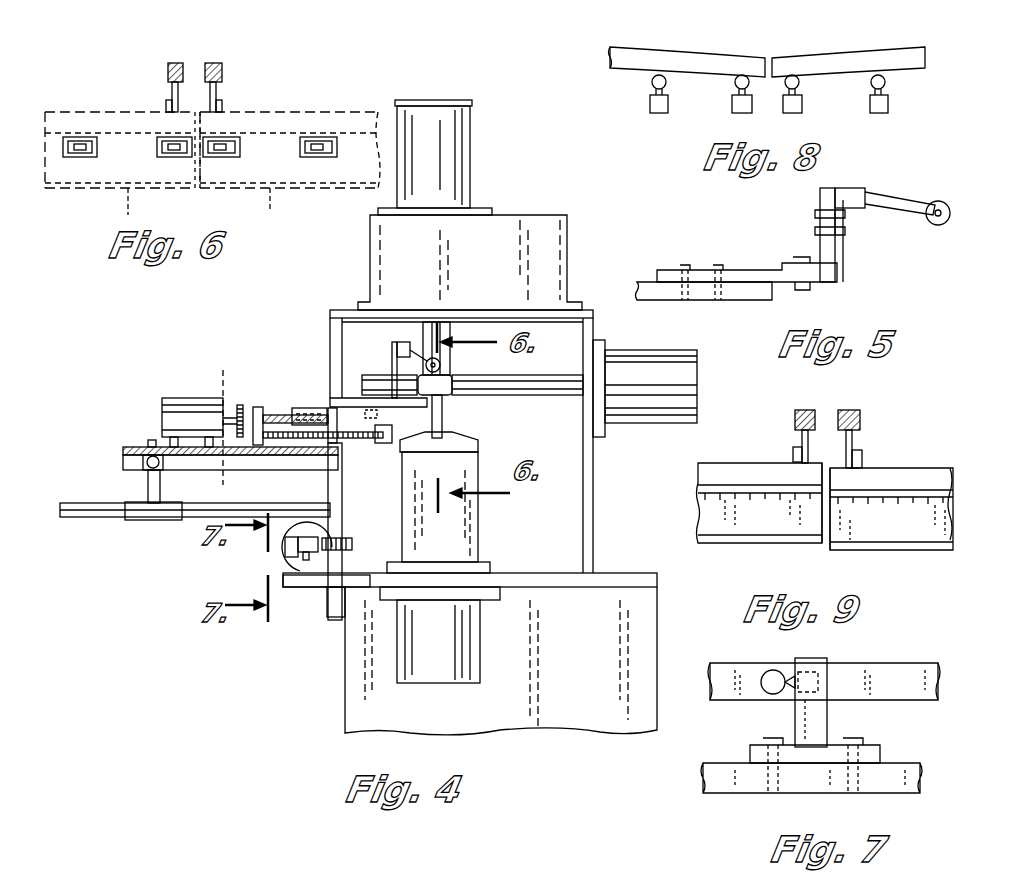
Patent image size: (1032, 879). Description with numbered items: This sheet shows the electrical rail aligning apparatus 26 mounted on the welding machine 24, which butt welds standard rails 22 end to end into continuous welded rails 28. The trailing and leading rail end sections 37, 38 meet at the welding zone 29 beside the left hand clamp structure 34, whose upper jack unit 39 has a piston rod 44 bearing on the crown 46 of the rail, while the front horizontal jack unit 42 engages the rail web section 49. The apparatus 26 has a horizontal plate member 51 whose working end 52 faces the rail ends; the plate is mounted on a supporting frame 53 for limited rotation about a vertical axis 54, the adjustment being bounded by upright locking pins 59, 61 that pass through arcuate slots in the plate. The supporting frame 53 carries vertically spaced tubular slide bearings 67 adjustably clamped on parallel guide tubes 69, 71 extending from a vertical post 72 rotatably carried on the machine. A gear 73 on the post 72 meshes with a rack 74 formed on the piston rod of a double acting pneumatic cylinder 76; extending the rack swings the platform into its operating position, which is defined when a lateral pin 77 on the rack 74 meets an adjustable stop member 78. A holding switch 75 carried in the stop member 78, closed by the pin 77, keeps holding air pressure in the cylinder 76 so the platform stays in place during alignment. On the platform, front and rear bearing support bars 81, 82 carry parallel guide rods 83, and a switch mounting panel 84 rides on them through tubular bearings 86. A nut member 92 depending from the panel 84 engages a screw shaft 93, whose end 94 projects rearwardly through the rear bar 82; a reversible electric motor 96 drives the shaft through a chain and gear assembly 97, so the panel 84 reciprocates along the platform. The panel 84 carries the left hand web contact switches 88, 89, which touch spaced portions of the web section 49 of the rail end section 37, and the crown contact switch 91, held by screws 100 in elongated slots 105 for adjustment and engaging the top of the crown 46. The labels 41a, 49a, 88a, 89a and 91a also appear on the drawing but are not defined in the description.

In FIG. 6, the standard length rail 22 is at (105, 190).
In FIG. 8, the standard length rail 22 is at (692, 55).
In FIG. 9, the standard length rail 22 is at (698, 515).
In FIG. 4, the standard length rail 22 is at (695, 520).
In FIG. 6, the welding machine 24 is at (335, 285).
In FIG. 4, the welding machine 24 is at (568, 213).
In FIG. 4, the rail aligning apparatus 26 is at (278, 316).
In FIG. 8, the continuous welded rail 28 is at (625, 47).
In FIG. 6, the rail welding zone 29 is at (193, 192).
In FIG. 9, the rail welding zone 29 is at (820, 550).
In FIG. 4, the left hand clamp structure 34 is at (478, 112).
In FIG. 8, the trailing end section 37 is at (737, 57).
In FIG. 9, the trailing end section 37 is at (750, 463).
In FIG. 4, the trailing end section 37 is at (480, 443).
In FIG. 8, the leading end section 38 is at (807, 56).
In FIG. 9, the leading end section 38 is at (890, 472).
In FIG. 4, the upper jack unit 39 is at (460, 158).
In FIG. 4, the lower shaft 41a is at (465, 655).
In FIG. 4, the front horizontal jack unit 42 is at (700, 377).
In FIG. 4, the piston rod 44 is at (420, 335).
In FIG. 6, the crown 46 is at (82, 112).
In FIG. 9, the crown 46 is at (775, 463).
In FIG. 4, the crown 46 is at (450, 375).
In FIG. 6, the rail web section 49 is at (128, 195).
In FIG. 8, the rail web section 49 is at (722, 77).
In FIG. 9, the rail web section 49 is at (748, 523).
In FIG. 4, the rail web section 49 is at (430, 395).
In FIG. 6, the rail flange 49a is at (284, 210).
In FIG. 4, the plate member 51 is at (130, 455).
In FIG. 4, the working end 52 is at (402, 455).
In FIG. 4, the supporting frame 53 is at (120, 457).
In FIG. 4, the vertical axis 54 is at (235, 415).
In FIG. 4, the locking pin 59 is at (280, 470).
In FIG. 4, the locking pin 61 is at (152, 440).
In FIG. 4, the tubular slide bearing 67 is at (140, 468).
In FIG. 4, the guide tube 69 is at (315, 470).
In FIG. 4, the guide tube 71 is at (90, 517).
In FIG. 4, the vertical post 72 is at (335, 620).
In FIG. 4, the gear 73 is at (355, 533).
In FIG. 7, the rack 74 is at (912, 672).
In FIG. 4, the rack 74 is at (325, 552).
In FIG. 7, the holding switch 75 is at (830, 655).
In FIG. 4, the holding switch 75 is at (305, 580).
In FIG. 4, the pneumatic cylinder 76 is at (285, 540).
In FIG. 4, the abutment pin 77 is at (300, 548).
In FIG. 7, the stop member 78 is at (825, 712).
In FIG. 4, the stop member 78 is at (290, 590).
In FIG. 4, the front bearing support bar 81 is at (240, 405).
In FIG. 4, the rear bearing support bar 82 is at (393, 450).
In FIG. 4, the guide rod 83 is at (258, 407).
In FIG. 5, the switch mounting panel 84 is at (660, 296).
In FIG. 4, the switch mounting panel 84 is at (300, 415).
In FIG. 4, the tubular bearing 86 is at (332, 408).
In FIG. 6, the web contact switch 88 is at (85, 157).
In FIG. 8, the web contact switch 88 is at (663, 113).
In FIG. 6, the sensor 88a is at (222, 157).
In FIG. 8, the sensor 88a is at (802, 104).
In FIG. 6, the web contact switch 89 is at (175, 157).
In FIG. 8, the web contact switch 89 is at (737, 108).
In FIG. 4, the web contact switch 89 is at (425, 405).
In FIG. 6, the sensor 89a is at (320, 157).
In FIG. 8, the sensor 89a is at (888, 104).
In FIG. 6, the crown contact switch 91 is at (177, 63).
In FIG. 5, the crown contact switch 91 is at (852, 188).
In FIG. 9, the crown contact switch 91 is at (806, 410).
In FIG. 4, the crown contact switch 91 is at (400, 342).
In FIG. 6, the probe 91a is at (218, 63).
In FIG. 9, the probe 91a is at (850, 410).
In FIG. 4, the nut member 92 is at (310, 410).
In FIG. 4, the screw shaft 93 is at (362, 455).
In FIG. 4, the screw shaft end 94 is at (380, 428).
In FIG. 4, the reversible electric motor 96 is at (180, 400).
In FIG. 4, the chain and gear assembly 97 is at (235, 418).
In FIG. 5, the holding screw 100 is at (682, 265).
In FIG. 5, the elongated slot 105 is at (730, 268).